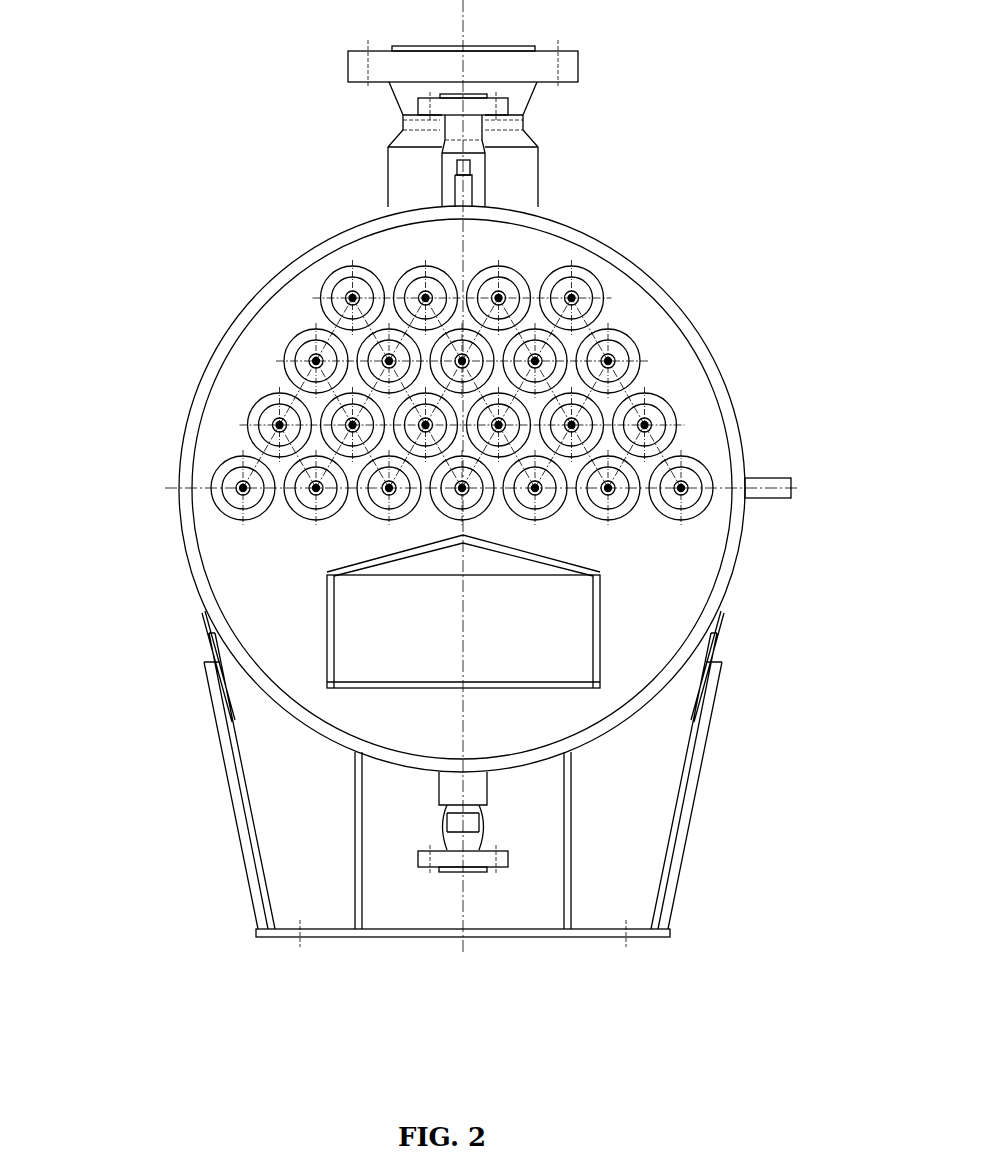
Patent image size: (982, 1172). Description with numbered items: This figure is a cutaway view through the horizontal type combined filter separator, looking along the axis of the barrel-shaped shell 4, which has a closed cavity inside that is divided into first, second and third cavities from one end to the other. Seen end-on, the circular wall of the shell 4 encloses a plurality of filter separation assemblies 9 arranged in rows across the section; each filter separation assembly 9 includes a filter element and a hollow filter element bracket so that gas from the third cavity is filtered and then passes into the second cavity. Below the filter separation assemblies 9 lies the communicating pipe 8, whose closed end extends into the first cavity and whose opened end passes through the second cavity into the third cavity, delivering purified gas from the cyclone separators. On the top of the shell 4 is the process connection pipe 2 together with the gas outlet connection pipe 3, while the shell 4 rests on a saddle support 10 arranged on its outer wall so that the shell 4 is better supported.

The process connection pipe 2 is at (302, 118).
The gas outlet connection pipe 3 is at (565, 74).
The shell 4 is at (429, 461).
The communicating pipe 8 is at (333, 568).
The filter separation assembly 9 is at (390, 393).
The saddle support 10 is at (395, 779).